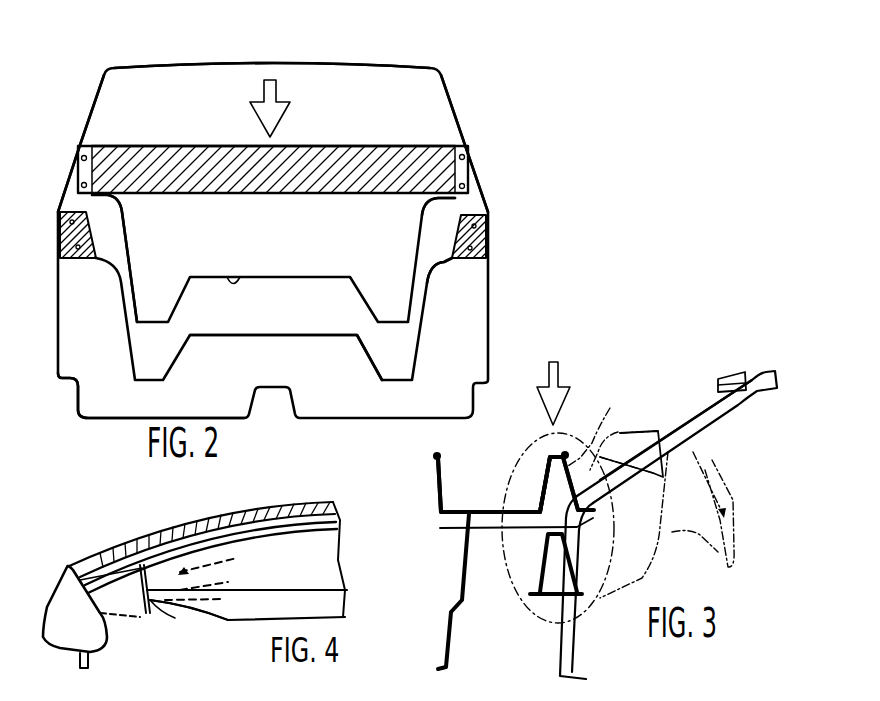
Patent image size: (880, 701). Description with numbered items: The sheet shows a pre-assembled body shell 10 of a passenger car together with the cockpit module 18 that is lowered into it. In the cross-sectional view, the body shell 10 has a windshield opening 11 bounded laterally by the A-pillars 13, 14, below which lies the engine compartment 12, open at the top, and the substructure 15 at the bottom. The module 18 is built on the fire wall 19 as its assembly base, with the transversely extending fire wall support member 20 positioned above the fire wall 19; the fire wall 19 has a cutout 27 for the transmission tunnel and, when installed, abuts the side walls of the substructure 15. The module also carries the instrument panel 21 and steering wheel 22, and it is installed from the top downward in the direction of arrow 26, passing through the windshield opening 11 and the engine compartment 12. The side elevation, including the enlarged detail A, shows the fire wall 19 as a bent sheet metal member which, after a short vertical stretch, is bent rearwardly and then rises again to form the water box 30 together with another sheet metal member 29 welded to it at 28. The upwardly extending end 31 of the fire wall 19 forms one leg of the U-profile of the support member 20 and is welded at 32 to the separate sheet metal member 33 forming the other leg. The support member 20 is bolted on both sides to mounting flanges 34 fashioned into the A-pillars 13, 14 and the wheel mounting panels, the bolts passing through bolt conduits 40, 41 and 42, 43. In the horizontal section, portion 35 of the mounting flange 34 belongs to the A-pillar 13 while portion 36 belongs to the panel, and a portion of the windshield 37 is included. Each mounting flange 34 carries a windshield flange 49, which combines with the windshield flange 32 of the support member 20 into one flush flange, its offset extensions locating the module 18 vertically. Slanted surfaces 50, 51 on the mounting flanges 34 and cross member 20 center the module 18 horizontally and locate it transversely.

In FIG. 2, the body shell 10 is at (383, 60).
In FIG. 3, the body shell 10 is at (763, 360).
In FIG. 2, the windshield opening 11 is at (381, 121).
In FIG. 3, the windshield opening 11 is at (708, 411).
In FIG. 2, the engine compartment 12 is at (253, 367).
In FIG. 2, the A-pillar 13 is at (466, 134).
In FIG. 3, the A-pillar 13 is at (723, 425).
In FIG. 4, the A-pillar 13 is at (58, 643).
In FIG. 2, the A-pillar 14 is at (78, 141).
In FIG. 2, the substructure 15 is at (140, 350).
In FIG. 2, the pre-assembled module 18 is at (187, 136).
In FIG. 2, the fire wall 19 is at (332, 266).
In FIG. 3, the fire wall 19 is at (452, 578).
In FIG. 2, the fire wall support member 20 is at (412, 145).
In FIG. 3, the fire wall support member 20 is at (607, 441).
In FIG. 4, the fire wall support member 20 is at (292, 546).
In FIG. 3, the instrument panel 21 is at (594, 425).
In FIG. 3, the steering wheel 22 is at (728, 496).
In FIG. 2, the arrow 26 is at (278, 88).
In FIG. 3, the arrow 26 is at (547, 378).
In FIG. 2, the cutout 27 is at (242, 275).
In FIG. 3, the weld 28 is at (447, 527).
In FIG. 3, the sheet metal member 29 is at (438, 477).
In FIG. 3, the water box 30 is at (492, 500).
In FIG. 3, the upwardly extending end 31 is at (544, 450).
In FIG. 3, the windshield flange 32 is at (562, 440).
In FIG. 4, the windshield flange 32 is at (158, 542).
In FIG. 3, the separate sheet metal member 33 is at (623, 468).
In FIG. 2, the mounting flange 34 is at (64, 234).
In FIG. 3, the mounting flange 34 is at (535, 573).
In FIG. 4, the mounting flange 34 is at (217, 562).
In FIG. 4, the mounting flange portion 35 is at (118, 633).
In FIG. 4, the mounting flange portion 36 is at (215, 583).
In FIG. 4, the windshield 37 is at (244, 516).
In FIG. 2, the bolt conduit 40 is at (458, 228).
In FIG. 4, the bolt conduit 40 is at (226, 621).
In FIG. 2, the bolt conduit 41 is at (467, 262).
In FIG. 4, the bolt conduit 41 is at (166, 615).
In FIG. 2, the bolt conduit 42 is at (466, 155).
In FIG. 2, the bolt conduit 43 is at (464, 186).
In FIG. 4, the windshield flange 49 is at (137, 565).
In FIG. 2, the slanted surface 50 is at (118, 234).
In FIG. 2, the slanted surface 51 is at (83, 173).
In FIG. 3, the detail A is at (517, 460).